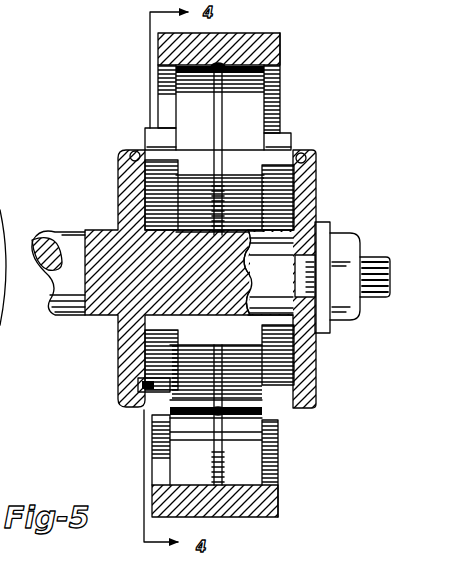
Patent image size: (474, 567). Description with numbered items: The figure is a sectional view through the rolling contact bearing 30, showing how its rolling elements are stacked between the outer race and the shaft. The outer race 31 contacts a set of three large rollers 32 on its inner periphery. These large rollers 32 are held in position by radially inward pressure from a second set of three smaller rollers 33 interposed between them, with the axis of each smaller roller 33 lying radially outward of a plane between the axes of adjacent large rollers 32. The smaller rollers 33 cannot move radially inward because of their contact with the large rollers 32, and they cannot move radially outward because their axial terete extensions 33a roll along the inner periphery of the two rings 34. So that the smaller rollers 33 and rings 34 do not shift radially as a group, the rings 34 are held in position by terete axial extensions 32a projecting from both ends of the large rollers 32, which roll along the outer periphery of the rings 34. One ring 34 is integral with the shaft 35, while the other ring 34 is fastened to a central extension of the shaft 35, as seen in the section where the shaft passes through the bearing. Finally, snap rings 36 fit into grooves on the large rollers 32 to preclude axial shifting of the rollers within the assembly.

The rolling contact bearing 30 is at (89, 73).
The outer race 31 is at (282, 42).
The large rollers 32 is at (250, 116).
The terete axial extensions 32a is at (145, 140).
The smaller rollers 33 is at (298, 403).
The axial terete extensions 33a is at (137, 378).
The rings 34 is at (131, 157).
The shaft 35 is at (78, 231).
The snap rings 36 is at (213, 120).